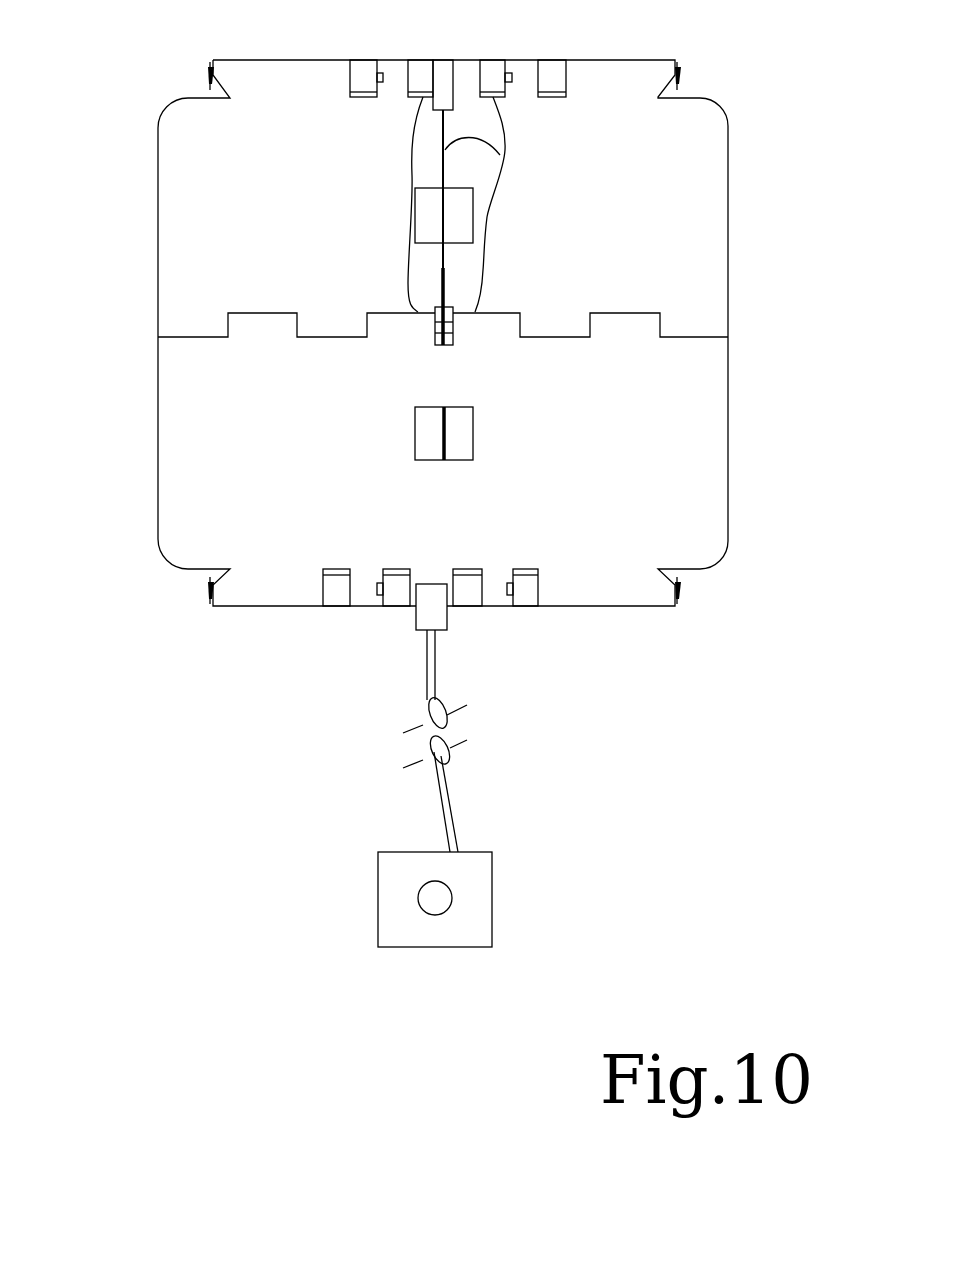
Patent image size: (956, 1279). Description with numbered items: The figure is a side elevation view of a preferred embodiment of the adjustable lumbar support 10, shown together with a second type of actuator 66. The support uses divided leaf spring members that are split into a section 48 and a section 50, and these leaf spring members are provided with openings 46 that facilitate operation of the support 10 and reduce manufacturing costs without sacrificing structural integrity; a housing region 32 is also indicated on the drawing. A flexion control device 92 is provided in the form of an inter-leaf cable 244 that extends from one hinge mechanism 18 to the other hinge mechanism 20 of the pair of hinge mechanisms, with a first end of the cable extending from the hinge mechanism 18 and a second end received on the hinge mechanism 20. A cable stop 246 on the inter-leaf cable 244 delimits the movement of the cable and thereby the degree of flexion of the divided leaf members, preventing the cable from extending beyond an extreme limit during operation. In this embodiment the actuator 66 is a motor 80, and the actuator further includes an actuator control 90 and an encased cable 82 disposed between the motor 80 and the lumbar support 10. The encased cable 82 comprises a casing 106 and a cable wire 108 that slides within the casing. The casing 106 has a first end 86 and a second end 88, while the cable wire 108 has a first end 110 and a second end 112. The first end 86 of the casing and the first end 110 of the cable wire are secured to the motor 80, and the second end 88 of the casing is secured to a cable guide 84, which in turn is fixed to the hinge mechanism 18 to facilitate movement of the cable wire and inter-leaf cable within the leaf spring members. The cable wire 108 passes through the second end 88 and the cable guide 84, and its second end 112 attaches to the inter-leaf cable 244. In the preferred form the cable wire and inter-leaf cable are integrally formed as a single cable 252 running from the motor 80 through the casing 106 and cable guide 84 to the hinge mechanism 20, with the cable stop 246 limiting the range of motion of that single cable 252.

The adjustable lumbar support 10 is at (133, 257).
The hinge mechanism 18 is at (680, 590).
The hinge mechanism 20 is at (678, 78).
The housing 32 is at (770, 230).
The openings 46 is at (430, 212).
The section 48 is at (667, 183).
The section 50 is at (667, 462).
The actuator 66 is at (303, 873).
The motor 80 is at (482, 907).
The encased cable 82 is at (437, 675).
The cable guide 84 is at (437, 598).
The first end of the casing 86 is at (465, 850).
The second end of the casing 88 is at (418, 640).
The actuator control 90 is at (435, 898).
The flexion control device 92 is at (408, 282).
The casing 106 is at (453, 787).
The cable wire 108 is at (443, 437).
The first end of the cable wire 110 is at (425, 830).
The second end of the cable wire 112 is at (423, 347).
The inter-leaf cable 244 is at (500, 155).
The cable stop 246 is at (447, 280).
The single cable 252 is at (503, 222).